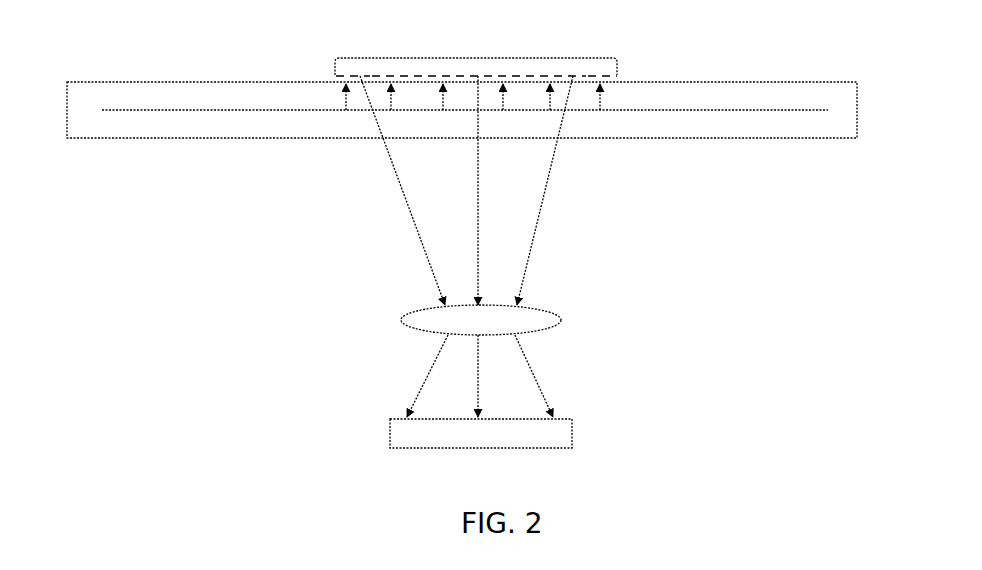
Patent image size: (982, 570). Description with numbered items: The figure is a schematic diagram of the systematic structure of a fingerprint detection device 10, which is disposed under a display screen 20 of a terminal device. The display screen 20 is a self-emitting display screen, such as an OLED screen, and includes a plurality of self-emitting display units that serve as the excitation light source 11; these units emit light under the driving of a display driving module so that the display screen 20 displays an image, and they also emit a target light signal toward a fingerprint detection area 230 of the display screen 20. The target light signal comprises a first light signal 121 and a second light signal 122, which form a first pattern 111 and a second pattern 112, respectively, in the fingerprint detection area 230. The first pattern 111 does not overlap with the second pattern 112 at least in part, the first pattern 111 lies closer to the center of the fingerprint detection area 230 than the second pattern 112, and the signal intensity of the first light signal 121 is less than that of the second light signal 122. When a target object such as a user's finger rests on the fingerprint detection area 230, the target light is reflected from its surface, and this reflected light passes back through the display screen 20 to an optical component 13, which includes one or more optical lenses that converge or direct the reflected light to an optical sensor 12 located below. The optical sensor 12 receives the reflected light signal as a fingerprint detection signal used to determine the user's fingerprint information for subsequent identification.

The fingerprint detection device 10 is at (695, 297).
The excitation light source 11 is at (492, 110).
The optical sensor 12 is at (572, 425).
The optical component 13 is at (540, 332).
The display screen 20 is at (752, 138).
The first pattern 111 is at (497, 76).
The second pattern 112 is at (358, 76).
The first light signal 121 is at (443, 88).
The second light signal 122 is at (346, 88).
The fingerprint detection area 230 is at (477, 57).